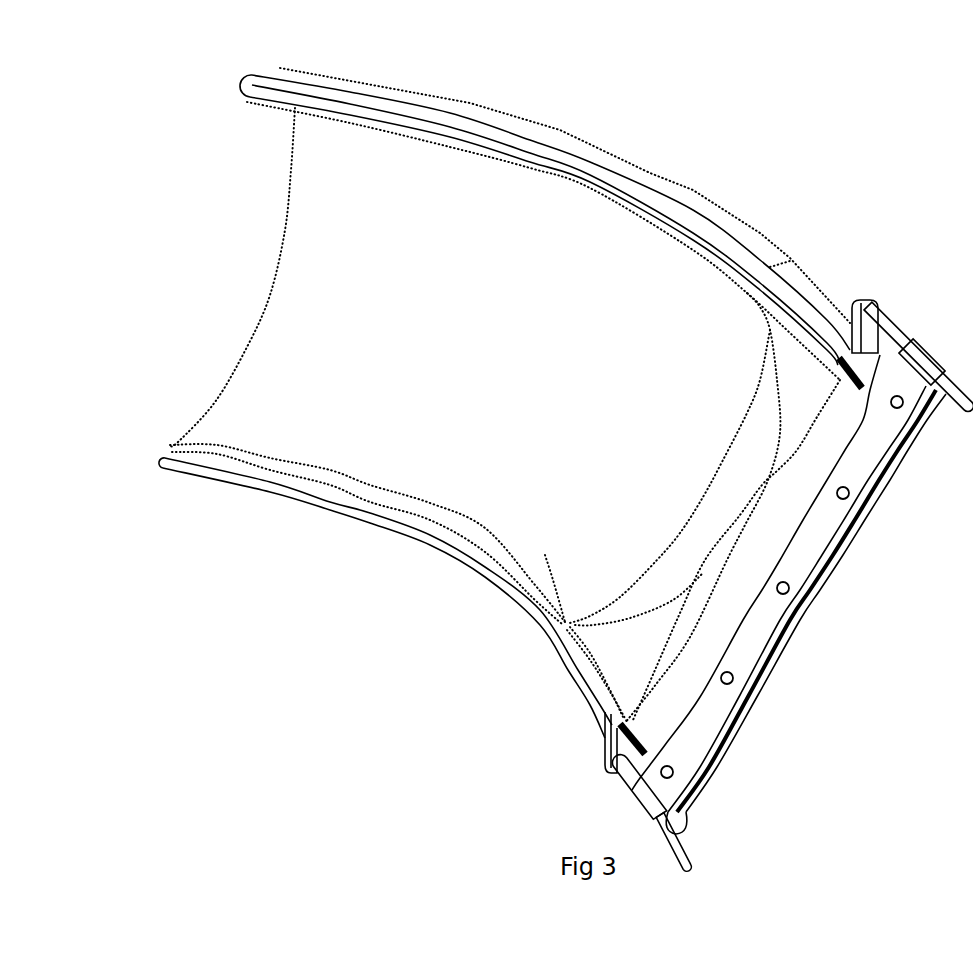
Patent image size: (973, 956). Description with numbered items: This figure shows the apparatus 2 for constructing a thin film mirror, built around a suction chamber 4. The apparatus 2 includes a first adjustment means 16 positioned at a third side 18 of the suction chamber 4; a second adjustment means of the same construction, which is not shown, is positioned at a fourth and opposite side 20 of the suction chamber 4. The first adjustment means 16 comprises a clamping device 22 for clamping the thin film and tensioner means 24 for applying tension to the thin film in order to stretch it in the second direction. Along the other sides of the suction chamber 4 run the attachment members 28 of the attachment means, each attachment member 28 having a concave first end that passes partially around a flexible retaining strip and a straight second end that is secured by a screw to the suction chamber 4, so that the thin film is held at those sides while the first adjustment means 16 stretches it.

The apparatus 2 is at (845, 196).
The suction chamber 4 is at (228, 357).
The first adjustment means 16 is at (872, 712).
The third side 18 is at (725, 455).
The fourth and opposite side 20 is at (284, 232).
The clamping device 22 is at (820, 532).
The tensioner means 24 is at (953, 403).
The attachment member 28 is at (632, 198).